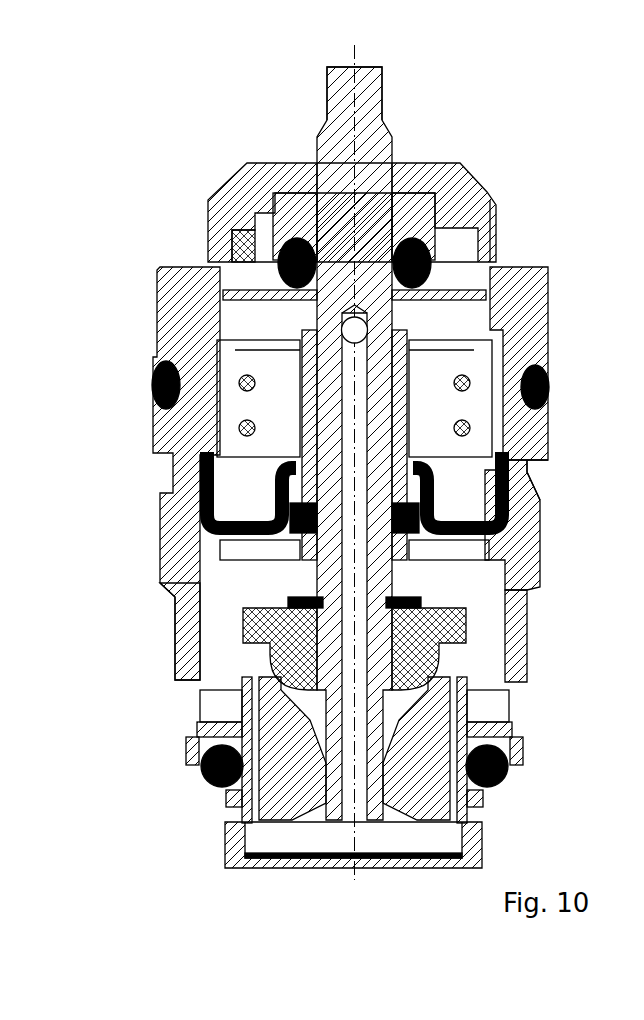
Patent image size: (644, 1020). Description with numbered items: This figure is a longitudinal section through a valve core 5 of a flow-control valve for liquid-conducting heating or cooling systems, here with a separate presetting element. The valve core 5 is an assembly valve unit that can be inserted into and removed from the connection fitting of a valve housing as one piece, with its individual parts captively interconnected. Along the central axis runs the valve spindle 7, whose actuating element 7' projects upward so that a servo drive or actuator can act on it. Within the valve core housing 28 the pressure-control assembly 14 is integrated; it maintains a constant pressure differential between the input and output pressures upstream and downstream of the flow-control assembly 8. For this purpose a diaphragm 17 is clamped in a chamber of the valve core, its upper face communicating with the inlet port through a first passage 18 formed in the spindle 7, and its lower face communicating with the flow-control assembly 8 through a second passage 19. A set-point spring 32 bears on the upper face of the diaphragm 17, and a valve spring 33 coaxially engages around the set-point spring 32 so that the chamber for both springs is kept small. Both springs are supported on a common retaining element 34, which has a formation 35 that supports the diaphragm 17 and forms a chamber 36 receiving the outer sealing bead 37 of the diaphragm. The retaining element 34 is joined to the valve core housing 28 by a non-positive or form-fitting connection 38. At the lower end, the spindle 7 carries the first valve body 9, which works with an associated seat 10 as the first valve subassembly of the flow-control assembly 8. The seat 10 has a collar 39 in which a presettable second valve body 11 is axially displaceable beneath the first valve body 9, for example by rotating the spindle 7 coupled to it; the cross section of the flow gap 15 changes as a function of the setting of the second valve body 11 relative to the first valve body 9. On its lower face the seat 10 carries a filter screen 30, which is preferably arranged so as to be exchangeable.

The actuating element 7' is at (473, 79).
The valve spindle 7 is at (466, 443).
The valve core 5 is at (506, 234).
The first passage 18 is at (493, 260).
The valve core housing 28 is at (173, 292).
The set-point spring 32 is at (540, 290).
The valve spring 33 is at (430, 380).
The connection 38 is at (217, 382).
The retaining element 34 is at (210, 437).
The pressure-control assembly 14 is at (520, 437).
The outer sealing bead 37 is at (203, 477).
The chamber 36 is at (522, 468).
The formation 35 is at (203, 503).
The diaphragm 17 is at (420, 520).
The second passage 19 is at (233, 545).
The flow-control assembly 8 is at (213, 638).
The flow gap 15 is at (430, 630).
The first valve body 9 is at (435, 663).
The seat 10 is at (445, 690).
The collar 39 is at (230, 697).
The second valve body 11 is at (505, 745).
The filter screen 30 is at (465, 850).